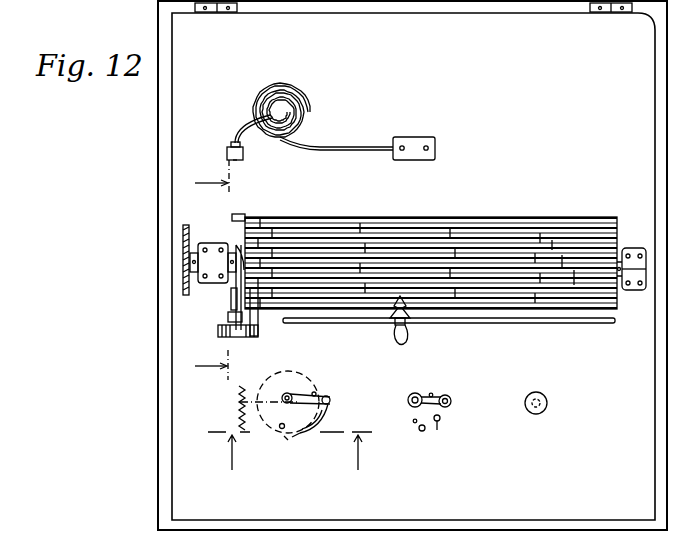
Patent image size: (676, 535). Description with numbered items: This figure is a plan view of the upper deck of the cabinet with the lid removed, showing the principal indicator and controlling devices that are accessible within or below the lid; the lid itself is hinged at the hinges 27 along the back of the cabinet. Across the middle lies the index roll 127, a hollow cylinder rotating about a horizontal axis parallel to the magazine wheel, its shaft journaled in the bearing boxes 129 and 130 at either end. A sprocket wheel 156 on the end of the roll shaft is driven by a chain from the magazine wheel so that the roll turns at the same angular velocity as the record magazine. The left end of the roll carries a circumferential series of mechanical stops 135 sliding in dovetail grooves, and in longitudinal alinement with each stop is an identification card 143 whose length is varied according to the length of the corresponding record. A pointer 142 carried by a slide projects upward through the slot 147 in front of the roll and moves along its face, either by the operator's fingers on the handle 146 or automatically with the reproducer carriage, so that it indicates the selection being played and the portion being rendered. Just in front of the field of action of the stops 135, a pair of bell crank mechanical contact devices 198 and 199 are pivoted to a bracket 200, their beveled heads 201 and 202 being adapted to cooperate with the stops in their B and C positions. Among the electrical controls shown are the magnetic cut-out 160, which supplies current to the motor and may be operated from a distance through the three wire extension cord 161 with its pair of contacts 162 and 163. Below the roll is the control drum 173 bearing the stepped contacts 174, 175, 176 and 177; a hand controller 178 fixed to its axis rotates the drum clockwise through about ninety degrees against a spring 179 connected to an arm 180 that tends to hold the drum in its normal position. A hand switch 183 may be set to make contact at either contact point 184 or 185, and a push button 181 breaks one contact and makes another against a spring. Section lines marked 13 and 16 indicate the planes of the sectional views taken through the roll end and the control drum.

The hinge 27 is at (217, 12).
The three wire extension cord 161 is at (333, 147).
The magnetic cut-out 160 is at (419, 137).
The contact 162 is at (229, 158).
The contact 163 is at (240, 160).
The section line 13 is at (212, 273).
The sprocket wheel 156 is at (183, 246).
The bearing box 130 is at (212, 256).
The head 201 is at (236, 248).
The head 202 is at (231, 296).
The bell crank mechanical contact device 199 is at (228, 320).
The bell crank mechanical contact device 198 is at (260, 328).
The bracket 200 is at (225, 334).
The mechanical stop 135 is at (244, 214).
The index roll 127 is at (474, 246).
The identification card 143 is at (577, 286).
The slot 147 is at (318, 323).
The pointer 142 is at (397, 312).
The handle 146 is at (405, 338).
The bearing box 129 is at (634, 248).
The control drum 173 is at (262, 386).
The arm 180 is at (266, 389).
The spring 179 is at (239, 408).
The stepped contact 174 is at (330, 400).
The hand controller 178 is at (316, 392).
The stepped contact 175 is at (326, 418).
The stepped contact 176 is at (306, 434).
The stepped contact 177 is at (281, 443).
The section line 16 is at (292, 451).
The hand switch 183 is at (426, 396).
The contact point 184 is at (449, 430).
The contact point 185 is at (420, 430).
The push button 181 is at (525, 404).